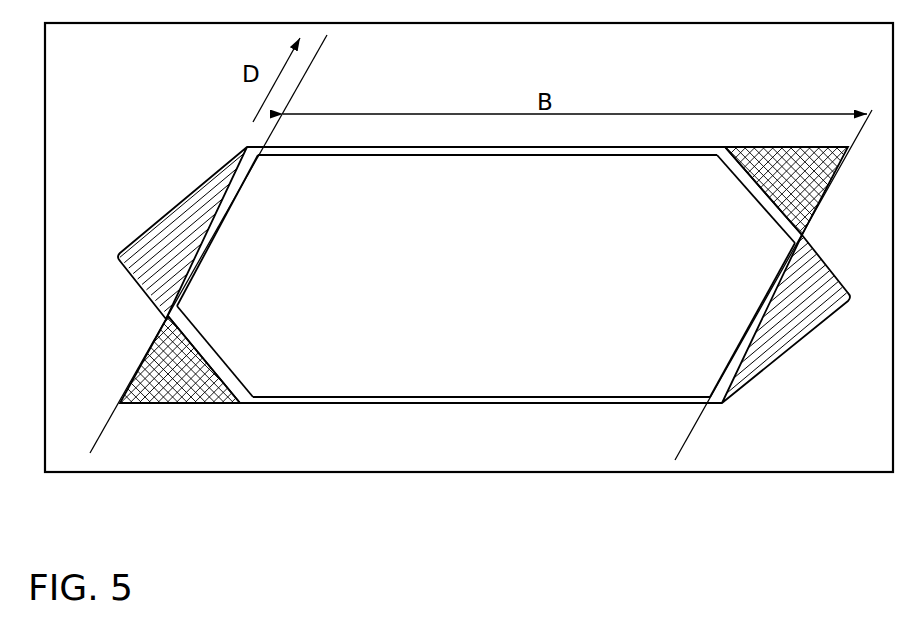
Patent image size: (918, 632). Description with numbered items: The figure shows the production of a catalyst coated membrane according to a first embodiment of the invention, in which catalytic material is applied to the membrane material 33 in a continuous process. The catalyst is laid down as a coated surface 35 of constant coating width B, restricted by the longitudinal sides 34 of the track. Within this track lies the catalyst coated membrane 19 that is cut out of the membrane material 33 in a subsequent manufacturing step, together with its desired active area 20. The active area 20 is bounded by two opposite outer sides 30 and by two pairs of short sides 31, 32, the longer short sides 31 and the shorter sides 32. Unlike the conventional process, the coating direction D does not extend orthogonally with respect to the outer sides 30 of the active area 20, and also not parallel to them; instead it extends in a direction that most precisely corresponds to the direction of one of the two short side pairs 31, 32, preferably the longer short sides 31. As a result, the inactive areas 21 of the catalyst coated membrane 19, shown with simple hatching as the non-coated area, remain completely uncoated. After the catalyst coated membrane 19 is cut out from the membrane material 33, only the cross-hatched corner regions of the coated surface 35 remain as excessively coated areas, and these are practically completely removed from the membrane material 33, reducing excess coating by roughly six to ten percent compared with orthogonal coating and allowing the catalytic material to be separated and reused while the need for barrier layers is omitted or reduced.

The catalyst coated membrane 19 is at (167, 202).
The active area 20 is at (484, 307).
The inactive areas 21 is at (172, 267).
The outer sides 30 is at (370, 158).
The longer short sides 31 is at (218, 228).
The short sides 32 is at (235, 360).
The membrane material 33 is at (337, 474).
The longitudinal sides 34 is at (105, 428).
The coated surface 35 is at (798, 188).